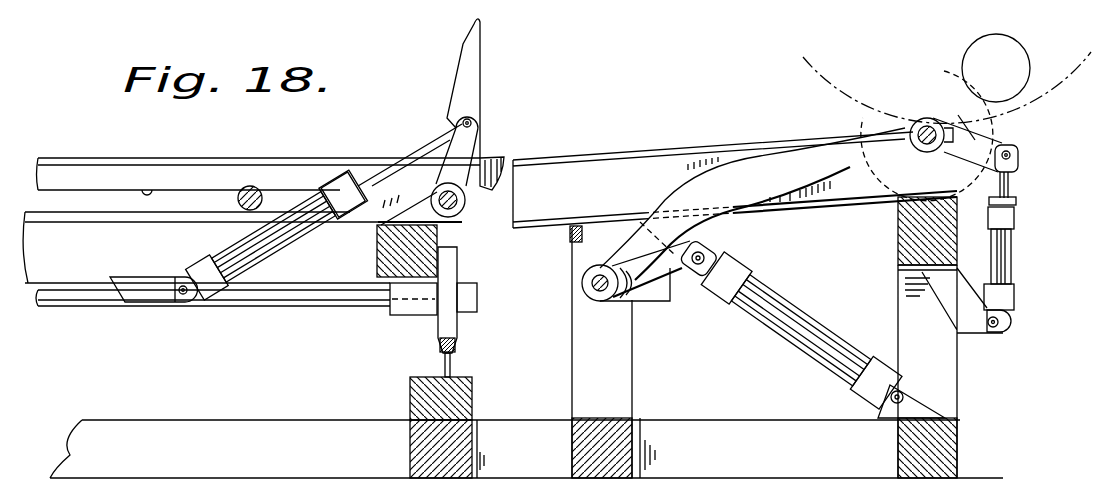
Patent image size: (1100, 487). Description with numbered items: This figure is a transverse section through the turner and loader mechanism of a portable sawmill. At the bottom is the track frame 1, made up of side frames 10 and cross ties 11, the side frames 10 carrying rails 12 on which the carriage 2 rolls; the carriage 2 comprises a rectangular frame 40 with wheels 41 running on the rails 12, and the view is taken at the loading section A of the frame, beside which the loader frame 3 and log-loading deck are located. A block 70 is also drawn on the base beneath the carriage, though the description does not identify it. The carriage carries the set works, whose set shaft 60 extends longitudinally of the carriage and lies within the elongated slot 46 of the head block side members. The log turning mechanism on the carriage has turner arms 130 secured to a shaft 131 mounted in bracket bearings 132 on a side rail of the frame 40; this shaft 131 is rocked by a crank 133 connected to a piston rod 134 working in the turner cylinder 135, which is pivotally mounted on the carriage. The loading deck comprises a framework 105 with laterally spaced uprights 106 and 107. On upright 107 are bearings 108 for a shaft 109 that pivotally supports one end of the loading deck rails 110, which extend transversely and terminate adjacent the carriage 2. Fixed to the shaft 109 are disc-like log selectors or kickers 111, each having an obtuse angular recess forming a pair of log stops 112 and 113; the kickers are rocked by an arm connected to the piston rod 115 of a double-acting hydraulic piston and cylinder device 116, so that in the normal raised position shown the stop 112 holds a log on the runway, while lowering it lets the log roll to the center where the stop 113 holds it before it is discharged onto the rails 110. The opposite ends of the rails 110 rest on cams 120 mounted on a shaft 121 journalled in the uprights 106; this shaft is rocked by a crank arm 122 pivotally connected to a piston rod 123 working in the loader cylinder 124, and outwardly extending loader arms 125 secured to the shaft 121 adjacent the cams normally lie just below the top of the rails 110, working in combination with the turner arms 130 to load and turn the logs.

The elongated slot 46 is at (148, 192).
The set shaft 60 is at (247, 186).
The piston rod 134 is at (372, 175).
The bracket bearings 132 is at (416, 206).
The crank 133 is at (453, 128).
The shaft 131 is at (478, 153).
The turner arms 130 is at (473, 47).
The turner cylinder 135 is at (228, 243).
The rectangular frame 40 is at (417, 233).
The wheels 41 is at (447, 263).
The rails 12 is at (445, 362).
The upper block 70 is at (453, 400).
The side frames 10 is at (420, 460).
The cross ties 11 is at (526, 449).
The loading section A is at (257, 387).
The track frame 1 is at (317, 439).
The carriage 2 is at (329, 260).
The loader frame 3 is at (648, 417).
The loading deck rails 110 is at (635, 149).
The loader arms 125 is at (732, 170).
The piston rod 123 is at (713, 253).
The cams 120 is at (600, 238).
The shaft 121 is at (597, 287).
The crank arm 122 is at (684, 268).
The loader cylinder 124 is at (772, 290).
The uprights 106 is at (605, 352).
The framework 105 is at (755, 456).
The bearings 108 is at (893, 200).
The upright 107 is at (933, 383).
The log stop 113 is at (865, 145).
The shaft 109 is at (927, 152).
The log selectors or kickers 111 is at (980, 123).
The log stop 112 is at (958, 115).
The piston rod 115 is at (1015, 185).
The hydraulic piston and cylinder device 116 is at (1013, 249).